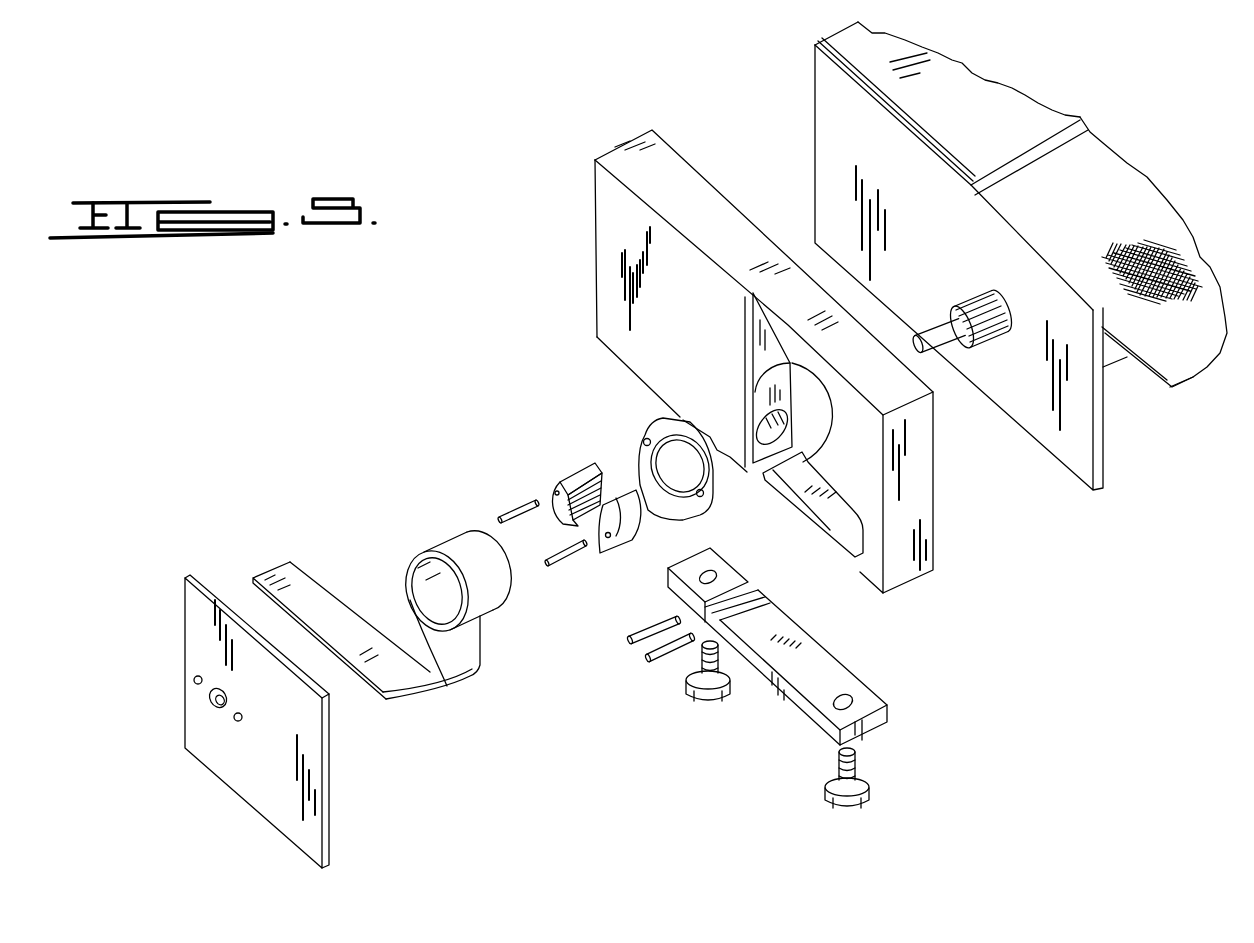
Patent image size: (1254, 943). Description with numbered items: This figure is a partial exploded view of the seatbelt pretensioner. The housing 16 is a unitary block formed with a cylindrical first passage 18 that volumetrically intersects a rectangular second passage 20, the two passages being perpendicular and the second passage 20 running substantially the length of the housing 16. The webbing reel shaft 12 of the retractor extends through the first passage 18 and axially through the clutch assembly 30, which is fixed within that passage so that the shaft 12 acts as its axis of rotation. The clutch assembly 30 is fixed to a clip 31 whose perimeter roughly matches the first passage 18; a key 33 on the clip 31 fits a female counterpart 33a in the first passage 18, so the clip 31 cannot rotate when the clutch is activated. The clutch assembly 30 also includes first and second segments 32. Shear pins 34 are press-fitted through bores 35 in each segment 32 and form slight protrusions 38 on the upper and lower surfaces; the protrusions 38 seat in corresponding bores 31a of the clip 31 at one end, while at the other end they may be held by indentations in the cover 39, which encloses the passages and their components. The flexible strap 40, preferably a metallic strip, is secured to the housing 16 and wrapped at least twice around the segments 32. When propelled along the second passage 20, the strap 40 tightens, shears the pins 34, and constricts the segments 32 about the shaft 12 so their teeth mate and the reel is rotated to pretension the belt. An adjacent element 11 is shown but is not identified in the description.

The mounting bracket 11 is at (1010, 158).
The webbing reel shaft 12 is at (990, 342).
The housing 16 is at (683, 185).
The first passage 18 is at (806, 403).
The second passage 20 is at (840, 535).
The clutch assembly 30 is at (498, 398).
The clip 31 is at (704, 437).
The bores 31a is at (712, 491).
The segments 32 is at (579, 464).
The key 33 is at (683, 425).
The female counterpart 33a is at (788, 358).
The shear pins 34 is at (561, 568).
The bores 35 is at (537, 478).
The protrusions 38 is at (500, 518).
The cover 39 is at (190, 635).
The flexible strap 40 is at (297, 578).